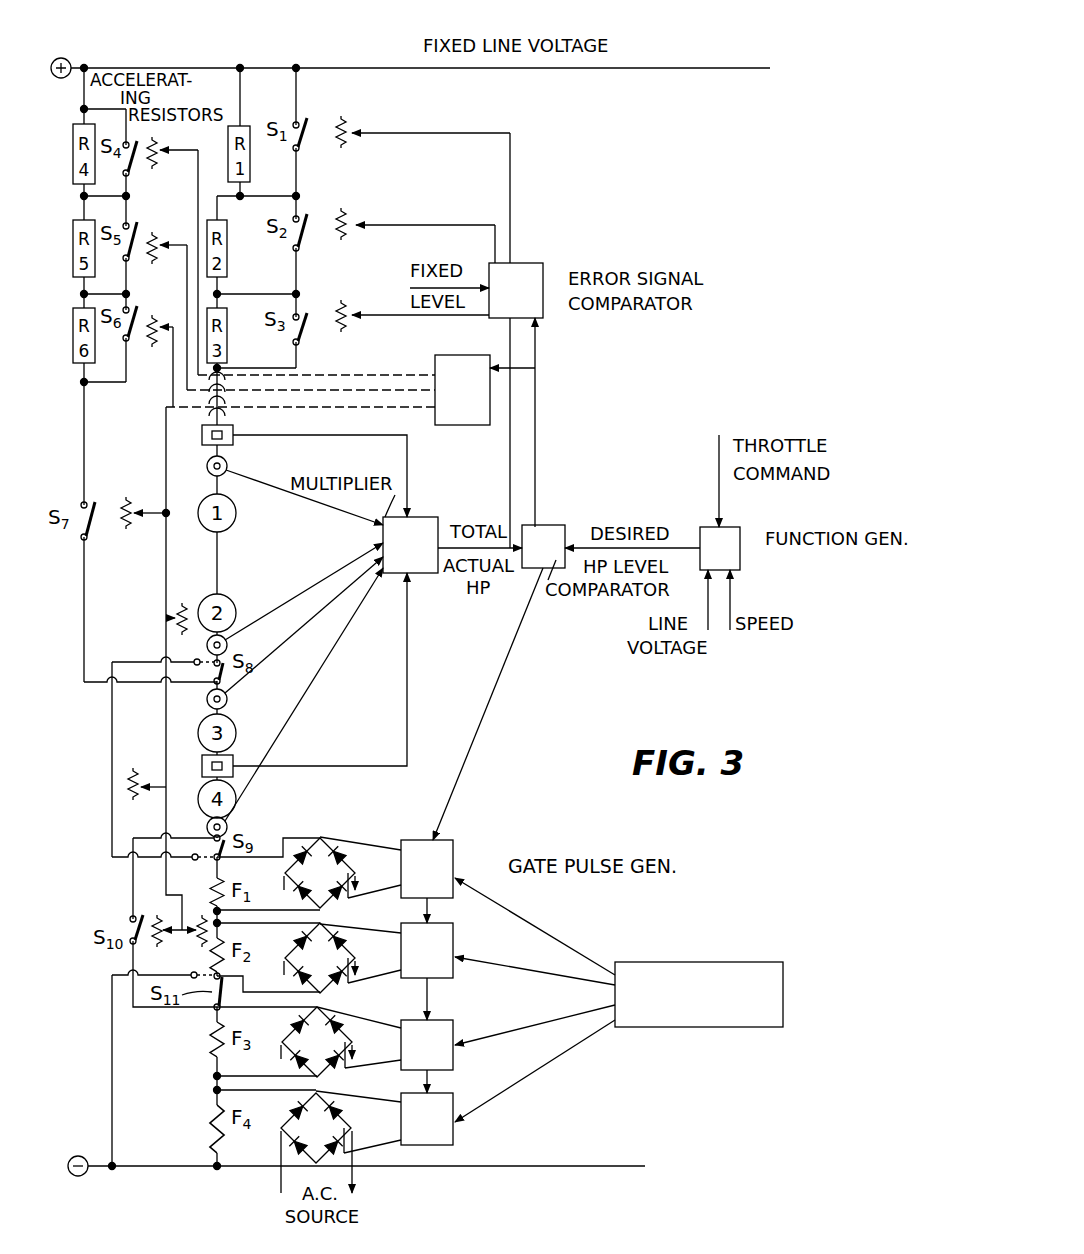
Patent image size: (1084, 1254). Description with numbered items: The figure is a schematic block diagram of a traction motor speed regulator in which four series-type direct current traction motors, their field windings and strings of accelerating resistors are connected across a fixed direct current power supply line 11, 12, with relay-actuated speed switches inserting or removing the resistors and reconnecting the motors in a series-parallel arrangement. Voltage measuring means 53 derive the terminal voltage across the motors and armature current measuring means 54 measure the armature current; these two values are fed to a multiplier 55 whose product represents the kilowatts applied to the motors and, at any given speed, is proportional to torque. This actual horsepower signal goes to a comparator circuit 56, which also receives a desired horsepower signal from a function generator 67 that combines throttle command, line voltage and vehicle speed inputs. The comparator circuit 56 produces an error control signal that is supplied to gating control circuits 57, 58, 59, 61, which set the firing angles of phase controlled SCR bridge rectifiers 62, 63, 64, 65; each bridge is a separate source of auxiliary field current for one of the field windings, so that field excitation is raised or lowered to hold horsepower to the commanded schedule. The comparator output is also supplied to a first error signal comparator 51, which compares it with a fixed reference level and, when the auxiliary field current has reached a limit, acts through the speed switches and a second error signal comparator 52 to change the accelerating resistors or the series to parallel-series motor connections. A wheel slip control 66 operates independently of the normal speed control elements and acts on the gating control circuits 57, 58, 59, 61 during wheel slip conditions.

The fixed direct current power supply line 11 is at (195, 68).
The fixed direct current power supply line 12 is at (185, 1170).
The first error signal comparator 51 is at (540, 265).
The No. 2 error signal comparator 52 is at (488, 425).
The voltage measuring means 53 is at (228, 466).
The armature current measuring means 54 is at (233, 430).
The multiplier 55 is at (432, 518).
The comparator circuit 56 is at (555, 528).
The gating control circuit 57 is at (453, 865).
The gating control circuit 58 is at (455, 947).
The gating control circuit 59 is at (453, 1038).
The gating control circuit 61 is at (453, 1110).
The phase controlled SCR bridge rectifier 62 is at (345, 884).
The phase controlled SCR bridge rectifier 63 is at (345, 969).
The phase controlled SCR bridge rectifier 64 is at (342, 1053).
The phase controlled SCR bridge rectifier 65 is at (341, 1139).
The wheel slip control 66 is at (780, 968).
The function generator 67 is at (740, 540).